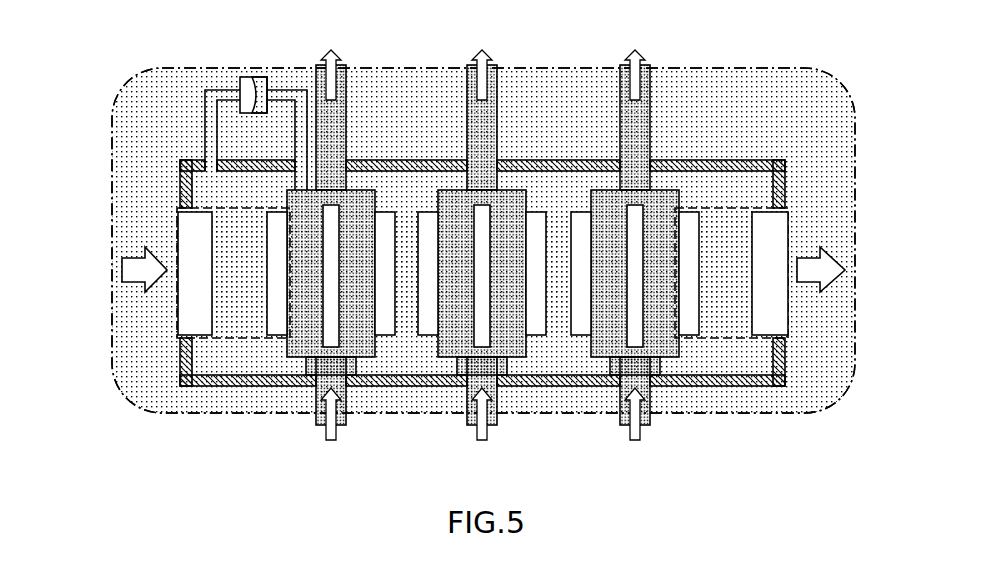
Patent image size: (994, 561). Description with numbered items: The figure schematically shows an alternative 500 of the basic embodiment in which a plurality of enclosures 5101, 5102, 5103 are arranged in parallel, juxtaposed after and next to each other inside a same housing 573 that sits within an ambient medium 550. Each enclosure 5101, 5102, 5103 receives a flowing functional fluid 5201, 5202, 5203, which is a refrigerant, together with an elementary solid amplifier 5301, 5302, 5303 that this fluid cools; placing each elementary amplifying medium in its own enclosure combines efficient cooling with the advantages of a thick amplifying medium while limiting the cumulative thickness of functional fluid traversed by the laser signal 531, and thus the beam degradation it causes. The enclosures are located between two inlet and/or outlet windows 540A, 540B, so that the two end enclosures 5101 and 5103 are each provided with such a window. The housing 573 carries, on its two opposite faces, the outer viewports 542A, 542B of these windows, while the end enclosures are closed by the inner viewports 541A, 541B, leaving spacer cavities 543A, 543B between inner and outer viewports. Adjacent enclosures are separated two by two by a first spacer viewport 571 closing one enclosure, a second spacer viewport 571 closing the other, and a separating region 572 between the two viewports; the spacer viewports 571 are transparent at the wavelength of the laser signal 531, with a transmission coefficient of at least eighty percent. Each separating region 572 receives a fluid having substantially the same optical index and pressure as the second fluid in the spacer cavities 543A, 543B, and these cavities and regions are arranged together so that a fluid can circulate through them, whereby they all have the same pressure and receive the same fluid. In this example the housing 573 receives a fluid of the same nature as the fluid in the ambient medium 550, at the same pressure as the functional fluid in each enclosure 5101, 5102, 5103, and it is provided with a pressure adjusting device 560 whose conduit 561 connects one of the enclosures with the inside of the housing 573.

The alternative embodiment 500 is at (105, 122).
The ambient medium 550 is at (828, 87).
The housing 573 is at (186, 183).
The conduit 561 is at (203, 108).
The pressure adjusting device 560 is at (228, 75).
The first enclosure 5101 is at (303, 362).
The second enclosure 5102 is at (455, 362).
The third enclosure 5103 is at (608, 362).
The functional fluid 5201 is at (352, 365).
The functional fluid 5202 is at (505, 365).
The functional fluid 5203 is at (658, 365).
The elementary solid amplifier 5301 is at (331, 205).
The elementary solid amplifier 5302 is at (482, 205).
The elementary solid amplifier 5303 is at (636, 205).
The spacer viewport 571 is at (383, 220).
The separating region 572 is at (410, 325).
The inlet and/or outlet window 540A is at (217, 337).
The inlet and/or outlet window 540B is at (715, 337).
The inner viewport 541A is at (275, 317).
The inner viewport 541B is at (688, 317).
The outer viewport 542A is at (190, 227).
The outer viewport 542B is at (768, 226).
The spacer cavity 543A is at (232, 293).
The spacer cavity 543B is at (735, 293).
The laser signal 531 is at (122, 270).